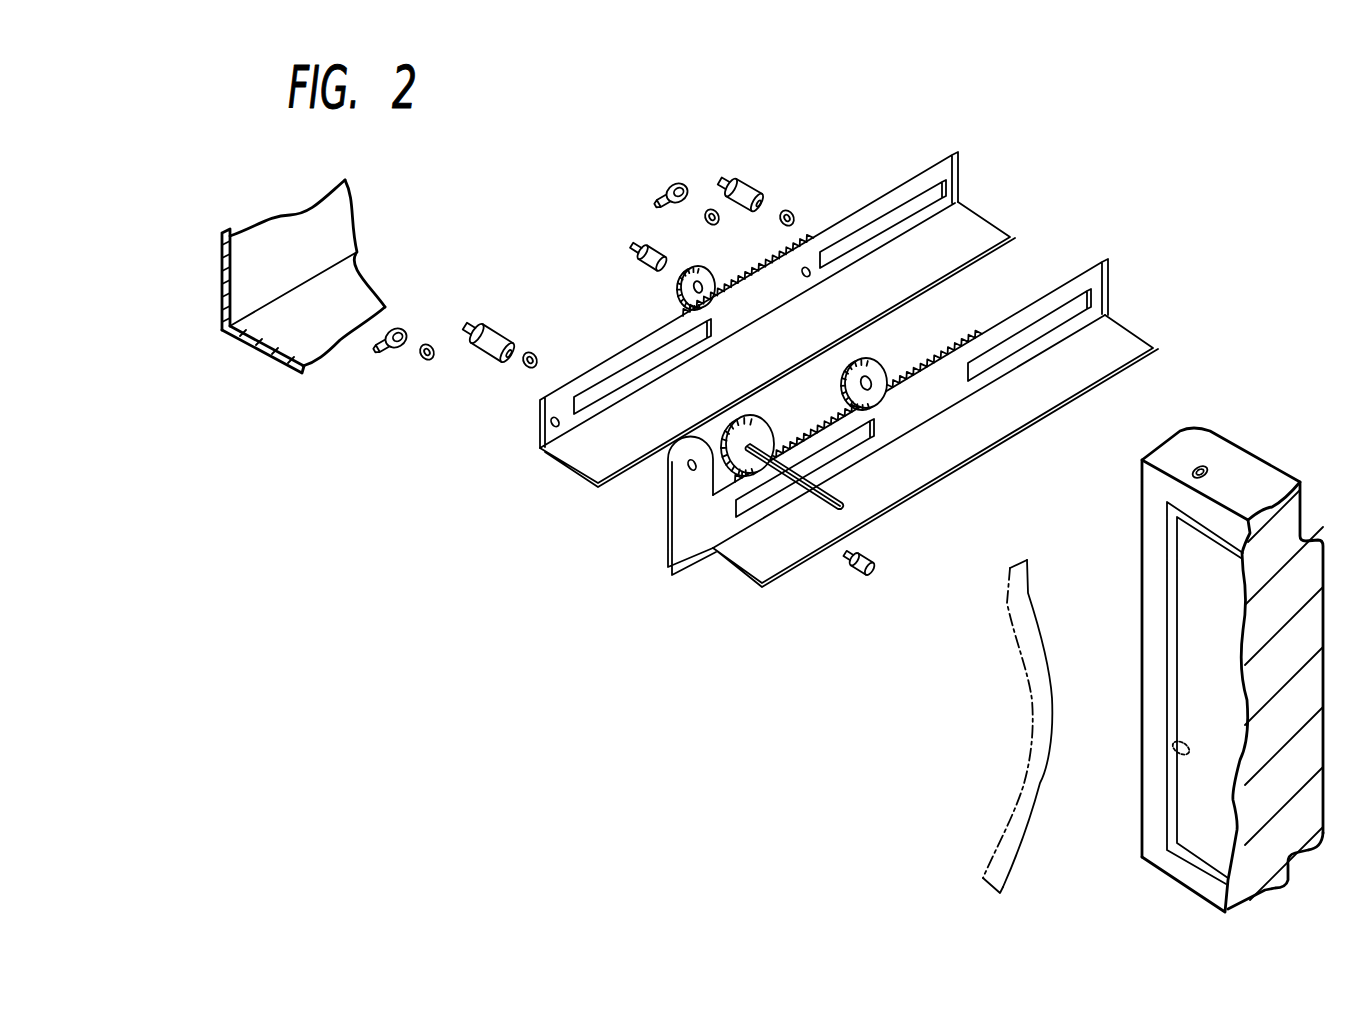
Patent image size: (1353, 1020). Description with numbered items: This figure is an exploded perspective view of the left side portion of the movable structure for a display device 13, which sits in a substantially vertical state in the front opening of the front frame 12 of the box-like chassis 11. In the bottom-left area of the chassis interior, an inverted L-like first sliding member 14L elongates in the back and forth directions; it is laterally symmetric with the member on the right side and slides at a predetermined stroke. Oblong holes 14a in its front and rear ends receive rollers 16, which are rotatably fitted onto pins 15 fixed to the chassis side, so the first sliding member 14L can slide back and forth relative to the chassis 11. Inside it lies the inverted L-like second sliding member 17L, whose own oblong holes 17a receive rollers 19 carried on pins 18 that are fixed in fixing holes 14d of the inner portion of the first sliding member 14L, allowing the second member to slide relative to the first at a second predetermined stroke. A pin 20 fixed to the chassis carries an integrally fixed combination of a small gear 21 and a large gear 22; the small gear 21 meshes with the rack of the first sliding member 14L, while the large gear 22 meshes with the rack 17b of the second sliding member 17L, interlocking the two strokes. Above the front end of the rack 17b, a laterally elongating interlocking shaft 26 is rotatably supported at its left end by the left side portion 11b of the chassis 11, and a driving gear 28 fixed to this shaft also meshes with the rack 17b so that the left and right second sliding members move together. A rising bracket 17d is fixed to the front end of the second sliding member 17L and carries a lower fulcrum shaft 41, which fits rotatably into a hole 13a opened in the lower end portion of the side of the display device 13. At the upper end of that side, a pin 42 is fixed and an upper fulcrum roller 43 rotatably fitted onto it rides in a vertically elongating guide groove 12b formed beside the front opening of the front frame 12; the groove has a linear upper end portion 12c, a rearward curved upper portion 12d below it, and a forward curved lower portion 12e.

The chassis 11 is at (268, 284).
The left side portion of the chassis 11b is at (238, 295).
The front frame 12 is at (1195, 644).
The guide groove 12b is at (1014, 704).
The upper end portion of the guide groove 12c is at (1017, 575).
The upper portion of the guide groove 12d is at (1043, 686).
The lower portion of the guide groove 12e is at (1003, 849).
The display device 13 is at (1186, 562).
The hole 13a is at (1175, 755).
The first sliding member 14L is at (739, 329).
The oblong hole 14a is at (885, 220).
The fixing hole 14d is at (550, 422).
The pin 15 is at (488, 325).
The roller 16 is at (530, 352).
The second sliding member 17L is at (926, 420).
The oblong hole 17a is at (828, 453).
The rack 17b is at (945, 347).
The rising bracket 17d is at (690, 552).
The pin 18 is at (385, 345).
The roller 19 is at (420, 358).
The pin 20 is at (643, 242).
The small gear 21 is at (693, 265).
The large gear 22 is at (866, 357).
The interlocking shaft 26 is at (817, 498).
The driving gear 28 is at (737, 423).
The lower fulcrum shaft 41 is at (872, 560).
The pin 42 is at (1207, 470).
The upper fulcrum roller 43 is at (1200, 465).